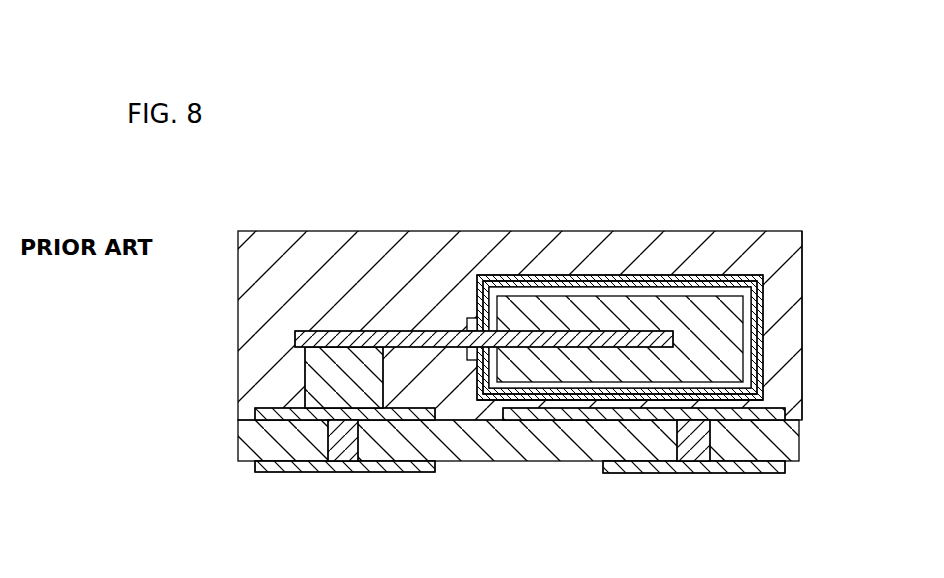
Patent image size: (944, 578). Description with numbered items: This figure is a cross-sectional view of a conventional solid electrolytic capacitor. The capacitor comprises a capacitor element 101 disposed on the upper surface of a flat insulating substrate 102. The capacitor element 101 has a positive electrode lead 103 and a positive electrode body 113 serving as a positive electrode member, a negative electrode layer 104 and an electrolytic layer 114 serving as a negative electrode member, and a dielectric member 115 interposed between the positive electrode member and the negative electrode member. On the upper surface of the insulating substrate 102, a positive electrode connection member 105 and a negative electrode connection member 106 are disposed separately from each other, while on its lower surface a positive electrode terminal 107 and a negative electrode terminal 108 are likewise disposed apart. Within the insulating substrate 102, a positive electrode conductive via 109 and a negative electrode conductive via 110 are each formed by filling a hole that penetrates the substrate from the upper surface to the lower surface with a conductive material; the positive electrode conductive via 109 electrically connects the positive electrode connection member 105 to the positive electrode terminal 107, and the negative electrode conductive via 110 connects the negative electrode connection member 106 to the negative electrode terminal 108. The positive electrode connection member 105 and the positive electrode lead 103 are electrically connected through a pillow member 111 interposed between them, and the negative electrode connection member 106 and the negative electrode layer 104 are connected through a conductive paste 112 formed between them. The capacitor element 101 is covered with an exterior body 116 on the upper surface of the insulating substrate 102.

The capacitor element 101 is at (662, 268).
The insulating substrate 102 is at (499, 440).
The positive electrode lead 103 is at (378, 360).
The negative electrode layer 104 is at (758, 327).
The positive electrode connection member 105 is at (260, 406).
The negative electrode connection member 106 is at (773, 413).
The positive electrode terminal 107 is at (292, 463).
The negative electrode terminal 108 is at (745, 465).
The positive electrode conductive via 109 is at (346, 440).
The negative electrode conductive via 110 is at (693, 443).
The pillow member 111 is at (328, 377).
The conductive paste 112 is at (578, 404).
The positive electrode body 113 is at (517, 317).
The dielectric member 115 is at (572, 290).
The electrolytic layer 114 is at (622, 283).
The exterior body 116 is at (773, 255).